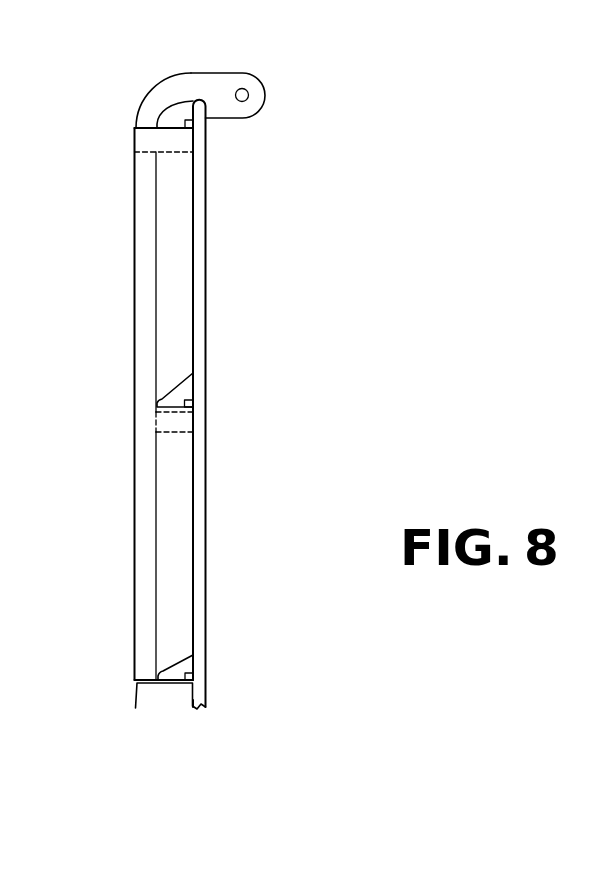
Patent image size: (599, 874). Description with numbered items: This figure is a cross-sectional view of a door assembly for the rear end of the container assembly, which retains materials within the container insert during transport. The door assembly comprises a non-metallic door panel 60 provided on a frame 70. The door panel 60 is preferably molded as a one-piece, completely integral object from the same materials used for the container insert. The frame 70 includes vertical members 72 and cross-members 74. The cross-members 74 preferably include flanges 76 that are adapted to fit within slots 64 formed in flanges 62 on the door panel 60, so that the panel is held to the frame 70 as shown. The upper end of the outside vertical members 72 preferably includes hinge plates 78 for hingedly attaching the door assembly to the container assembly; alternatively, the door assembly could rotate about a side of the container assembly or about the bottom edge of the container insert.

The door panel 60 is at (206, 232).
The flanges 62 is at (172, 119).
The slots 64 is at (188, 119).
The frame 70 is at (118, 393).
The vertical members 72 is at (143, 226).
The cross-members 74 is at (173, 155).
The flanges 76 is at (192, 131).
The hinge plates 78 is at (267, 90).